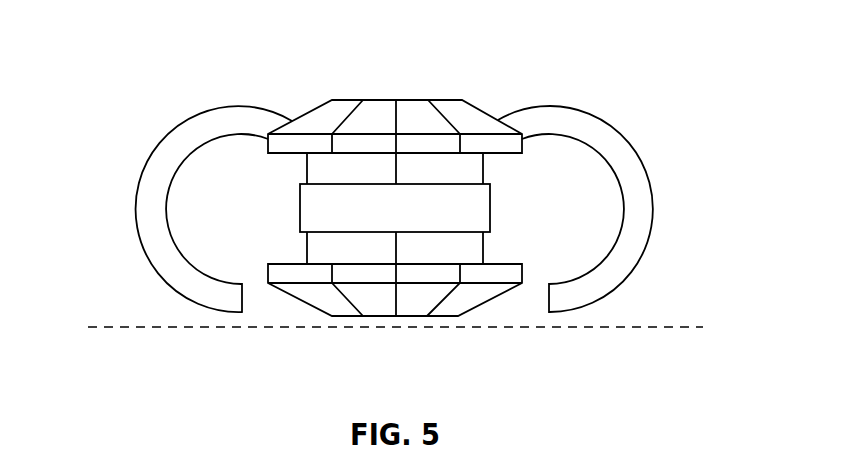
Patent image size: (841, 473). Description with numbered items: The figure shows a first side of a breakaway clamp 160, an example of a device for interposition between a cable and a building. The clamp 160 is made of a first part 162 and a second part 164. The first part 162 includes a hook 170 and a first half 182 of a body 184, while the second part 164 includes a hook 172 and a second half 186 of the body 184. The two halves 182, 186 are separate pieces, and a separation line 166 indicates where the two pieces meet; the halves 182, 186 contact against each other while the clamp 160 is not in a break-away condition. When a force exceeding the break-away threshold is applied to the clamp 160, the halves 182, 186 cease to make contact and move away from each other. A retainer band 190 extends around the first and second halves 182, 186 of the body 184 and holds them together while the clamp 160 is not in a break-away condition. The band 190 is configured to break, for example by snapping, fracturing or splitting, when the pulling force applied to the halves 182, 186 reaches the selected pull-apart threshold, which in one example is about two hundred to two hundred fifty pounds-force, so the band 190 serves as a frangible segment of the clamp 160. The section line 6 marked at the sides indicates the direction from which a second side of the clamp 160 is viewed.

The breakaway clamp 160 is at (127, 44).
The first part 162 is at (287, 106).
The second part 164 is at (508, 92).
The separation line 166 is at (397, 298).
The hook 170 is at (217, 122).
The hook 172 is at (570, 117).
The first half of body 182 is at (318, 297).
The body 184 is at (372, 338).
The second half of body 186 is at (460, 300).
The retainer band 190 is at (312, 215).
The section line 6 is at (88, 327).